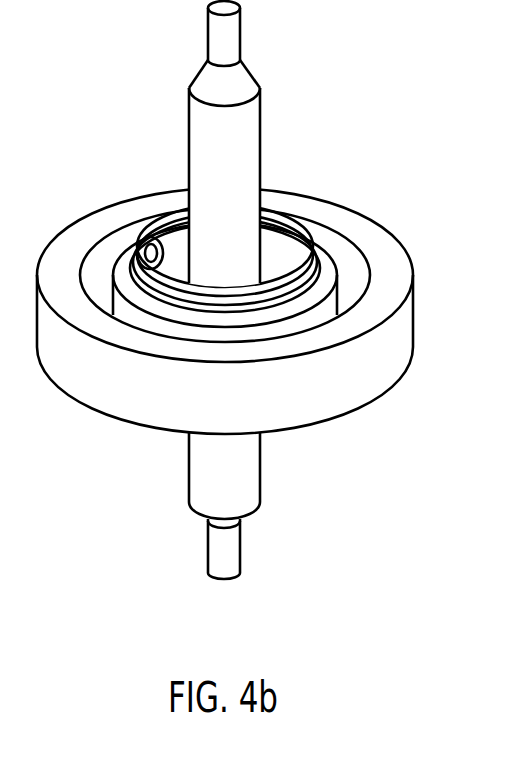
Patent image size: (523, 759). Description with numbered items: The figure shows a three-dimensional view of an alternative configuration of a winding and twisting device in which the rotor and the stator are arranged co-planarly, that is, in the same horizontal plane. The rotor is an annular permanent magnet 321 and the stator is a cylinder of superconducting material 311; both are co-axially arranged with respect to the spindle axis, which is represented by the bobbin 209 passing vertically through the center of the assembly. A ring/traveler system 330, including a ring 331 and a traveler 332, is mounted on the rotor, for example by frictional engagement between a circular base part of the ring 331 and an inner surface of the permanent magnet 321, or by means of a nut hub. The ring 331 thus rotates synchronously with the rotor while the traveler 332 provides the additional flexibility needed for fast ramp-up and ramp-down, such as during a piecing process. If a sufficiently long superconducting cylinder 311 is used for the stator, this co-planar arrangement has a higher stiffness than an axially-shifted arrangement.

The bobbin 209 is at (234, 37).
The cylinder of superconducting material 311 is at (373, 382).
The annular permanent magnet 321 is at (334, 303).
The ring/traveler system 330 is at (137, 307).
The ring 331 is at (83, 226).
The traveler 332 is at (146, 236).